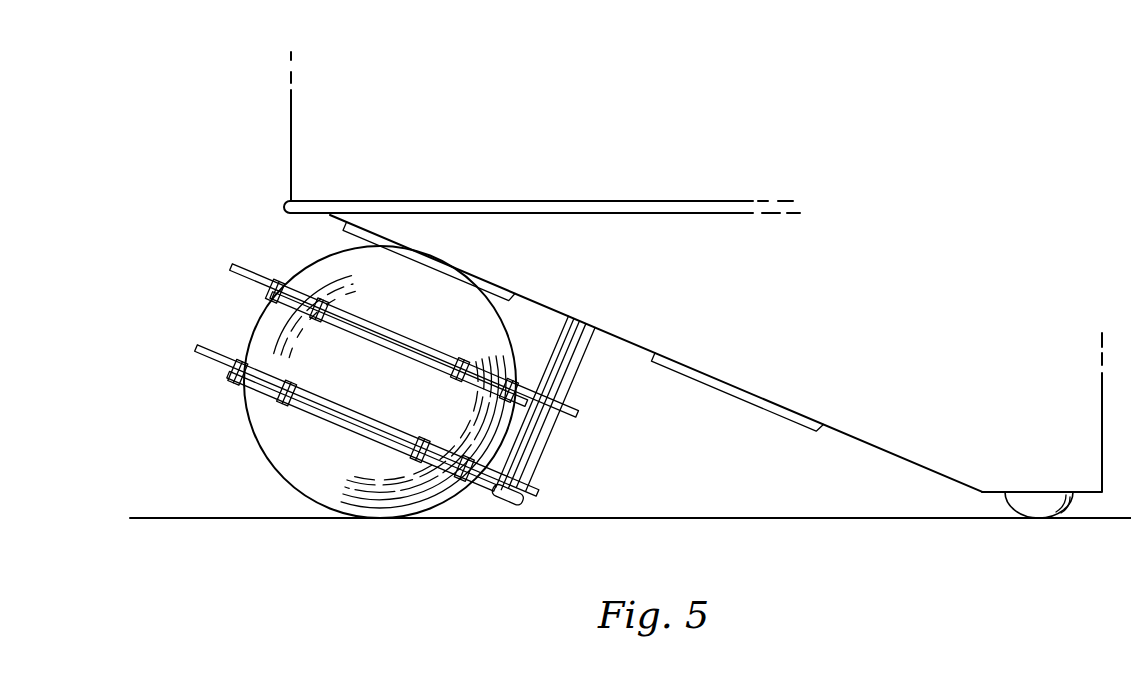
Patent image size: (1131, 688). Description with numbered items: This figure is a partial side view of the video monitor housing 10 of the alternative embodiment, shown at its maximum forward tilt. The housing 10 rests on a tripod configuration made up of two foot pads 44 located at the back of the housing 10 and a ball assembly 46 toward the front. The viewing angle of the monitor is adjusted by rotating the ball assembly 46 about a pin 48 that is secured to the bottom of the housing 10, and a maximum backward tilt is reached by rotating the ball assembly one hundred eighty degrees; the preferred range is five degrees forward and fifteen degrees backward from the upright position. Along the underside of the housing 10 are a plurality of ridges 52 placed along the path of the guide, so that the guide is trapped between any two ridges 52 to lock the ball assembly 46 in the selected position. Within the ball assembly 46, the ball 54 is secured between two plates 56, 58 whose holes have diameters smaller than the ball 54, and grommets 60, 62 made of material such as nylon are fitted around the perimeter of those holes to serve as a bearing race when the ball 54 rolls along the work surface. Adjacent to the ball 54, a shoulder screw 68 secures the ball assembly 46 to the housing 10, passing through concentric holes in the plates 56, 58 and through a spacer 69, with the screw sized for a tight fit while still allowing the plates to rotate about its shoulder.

The monitor housing 10 is at (481, 156).
The foot pads 44 is at (1073, 495).
The ball assembly 46 is at (242, 455).
The pin 48 is at (543, 410).
The ridges 52 is at (583, 327).
The ball 54 is at (423, 294).
The plate 56 is at (364, 426).
The plate 58 is at (402, 345).
The grommet 60 is at (391, 340).
The grommet 62 is at (243, 370).
The shoulder screw 68 is at (555, 408).
The spacer 69 is at (538, 404).